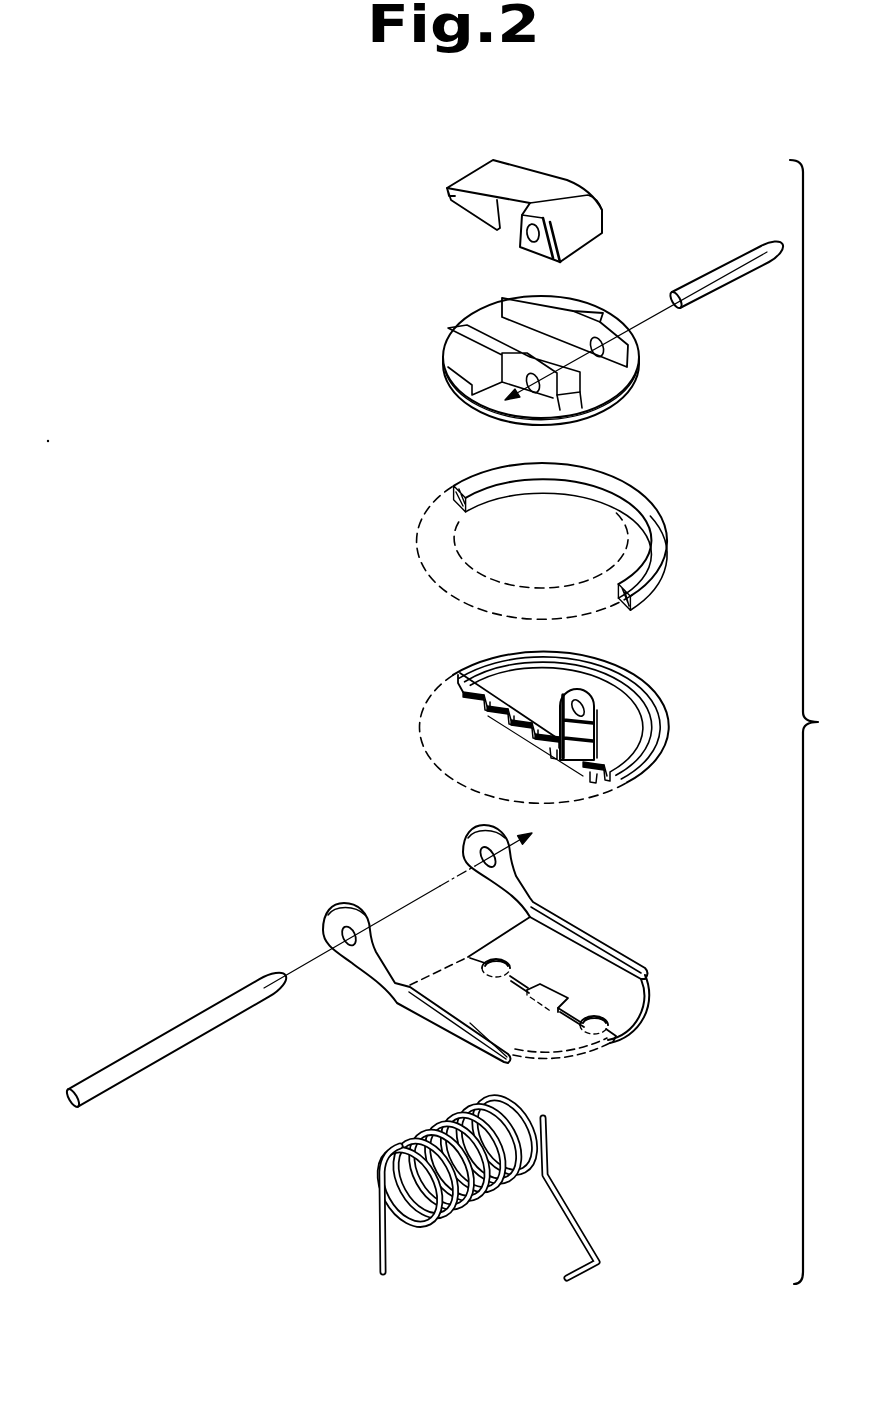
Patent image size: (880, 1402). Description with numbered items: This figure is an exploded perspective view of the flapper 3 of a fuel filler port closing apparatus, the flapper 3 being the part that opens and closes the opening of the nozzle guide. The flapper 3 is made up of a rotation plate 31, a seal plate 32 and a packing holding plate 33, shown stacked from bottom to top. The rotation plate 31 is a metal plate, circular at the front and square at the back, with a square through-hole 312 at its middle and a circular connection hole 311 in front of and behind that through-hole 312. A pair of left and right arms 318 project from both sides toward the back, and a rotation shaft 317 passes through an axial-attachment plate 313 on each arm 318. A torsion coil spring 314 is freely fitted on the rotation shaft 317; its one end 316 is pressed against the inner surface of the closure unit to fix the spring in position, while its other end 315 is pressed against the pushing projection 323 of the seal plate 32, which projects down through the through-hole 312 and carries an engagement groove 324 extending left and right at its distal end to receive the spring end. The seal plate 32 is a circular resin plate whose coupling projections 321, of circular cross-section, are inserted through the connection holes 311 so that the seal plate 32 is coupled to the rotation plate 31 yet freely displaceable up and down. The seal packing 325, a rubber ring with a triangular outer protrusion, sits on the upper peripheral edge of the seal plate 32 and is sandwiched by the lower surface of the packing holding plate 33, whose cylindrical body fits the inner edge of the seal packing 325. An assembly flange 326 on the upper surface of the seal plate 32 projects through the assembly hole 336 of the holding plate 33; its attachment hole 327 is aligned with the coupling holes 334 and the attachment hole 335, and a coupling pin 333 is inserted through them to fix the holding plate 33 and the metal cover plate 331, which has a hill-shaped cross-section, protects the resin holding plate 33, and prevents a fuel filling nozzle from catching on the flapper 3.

The flapper 3 is at (817, 722).
The rotation plate 31 is at (482, 946).
The connection hole 311 is at (500, 952).
The through-hole 312 is at (460, 1030).
The axial-attachment plate 313 is at (478, 838).
The torsion coil spring 314 is at (442, 1183).
The other end of torsion coil spring 315 is at (563, 1272).
The one end of torsion coil spring 316 is at (380, 1267).
The rotation shaft 317 is at (167, 1048).
The arm 318 is at (553, 905).
The seal plate 32 is at (558, 746).
The coupling projection 321 is at (457, 690).
The pushing projection 323 is at (517, 713).
The engagement groove 324 is at (550, 752).
The seal packing 325 is at (655, 505).
The assembly flange 326 is at (648, 718).
The attachment hole 327 is at (605, 690).
The packing holding plate 33 is at (467, 368).
The cover plate 331 is at (498, 178).
The coupling pin 333 is at (710, 268).
The coupling hole 334 is at (605, 352).
The attachment hole 335 is at (486, 249).
The assembly hole 336 is at (603, 415).